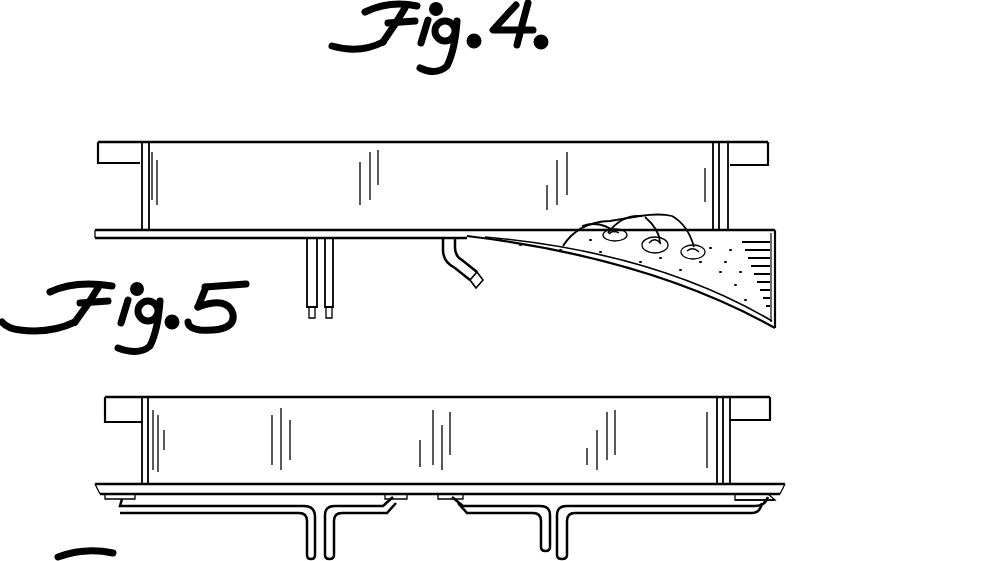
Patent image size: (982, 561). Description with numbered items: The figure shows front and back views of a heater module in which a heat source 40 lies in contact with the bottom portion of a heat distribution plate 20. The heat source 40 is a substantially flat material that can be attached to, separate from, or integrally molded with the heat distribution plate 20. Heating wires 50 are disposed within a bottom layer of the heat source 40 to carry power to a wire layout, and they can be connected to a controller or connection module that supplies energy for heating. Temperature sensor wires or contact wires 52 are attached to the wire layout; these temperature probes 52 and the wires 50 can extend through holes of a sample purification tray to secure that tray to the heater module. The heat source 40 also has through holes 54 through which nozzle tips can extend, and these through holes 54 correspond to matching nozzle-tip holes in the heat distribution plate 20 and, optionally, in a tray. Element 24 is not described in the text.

In FIG. 4, the heat distribution plate 20 is at (124, 213).
In FIG. 5, the heat distribution plate 20 is at (124, 456).
In FIG. 4, the housing body 24 is at (290, 156).
In FIG. 5, the housing body 24 is at (313, 412).
In FIG. 4, the heat source 40 is at (700, 312).
In FIG. 5, the heat source 40 is at (766, 485).
In FIG. 4, the heating wires 50 is at (305, 270).
In FIG. 5, the heating wires 50 is at (225, 515).
In FIG. 4, the temperature sensor wires 52 is at (442, 267).
In FIG. 5, the temperature sensor wires 52 is at (543, 530).
In FIG. 4, the through holes 54 is at (563, 246).